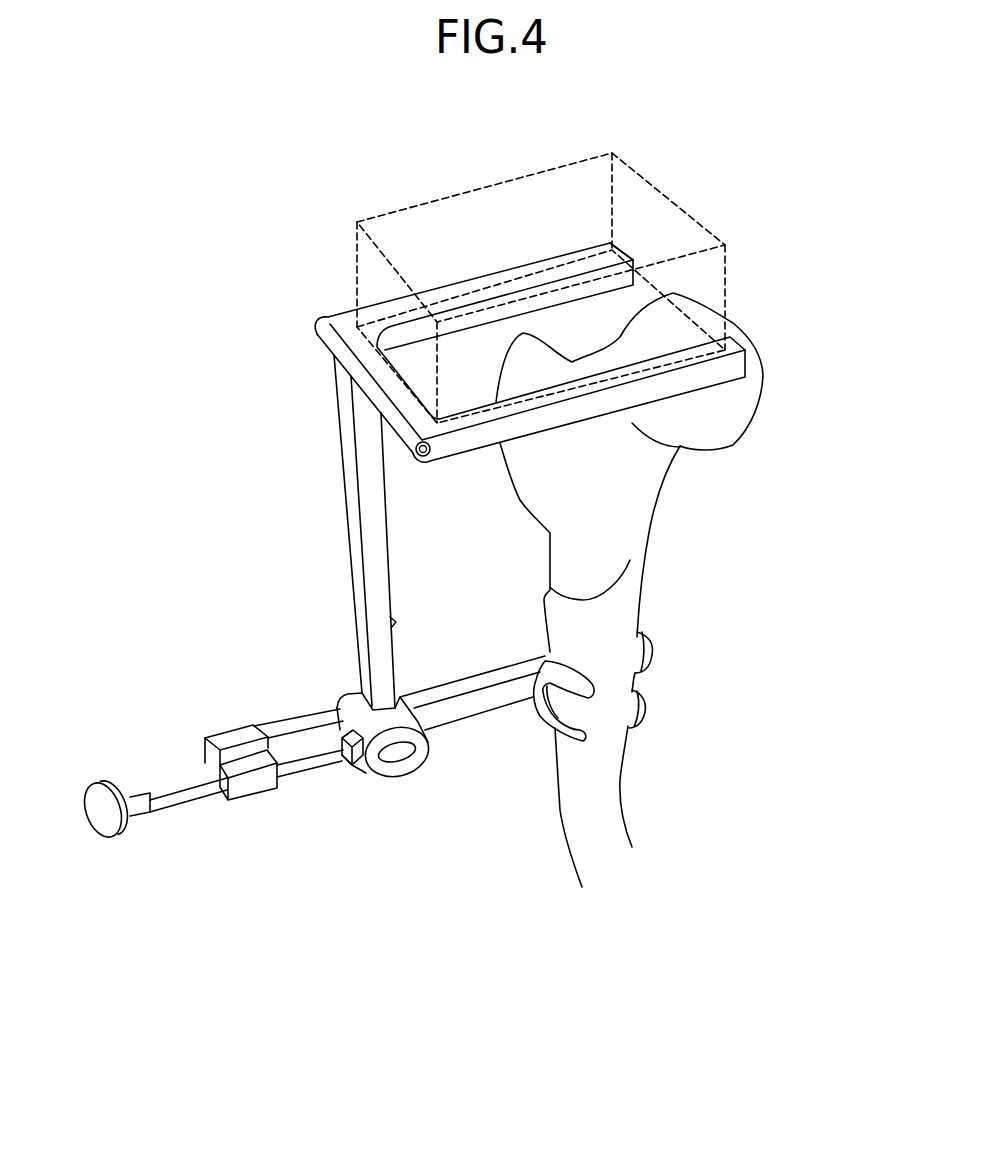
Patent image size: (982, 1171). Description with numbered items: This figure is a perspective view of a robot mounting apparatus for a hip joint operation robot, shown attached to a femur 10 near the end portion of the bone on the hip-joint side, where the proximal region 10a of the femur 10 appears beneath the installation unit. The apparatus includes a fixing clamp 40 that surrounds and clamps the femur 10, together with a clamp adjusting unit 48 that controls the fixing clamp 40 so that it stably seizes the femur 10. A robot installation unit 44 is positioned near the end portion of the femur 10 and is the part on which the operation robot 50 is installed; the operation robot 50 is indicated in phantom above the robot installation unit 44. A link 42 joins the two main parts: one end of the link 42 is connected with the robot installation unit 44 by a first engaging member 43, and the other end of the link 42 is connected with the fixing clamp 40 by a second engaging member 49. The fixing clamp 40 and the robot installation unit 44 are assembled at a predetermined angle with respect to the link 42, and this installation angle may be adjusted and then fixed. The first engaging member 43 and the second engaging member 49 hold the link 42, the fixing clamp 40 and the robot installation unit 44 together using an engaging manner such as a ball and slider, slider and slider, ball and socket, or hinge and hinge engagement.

The femur 10 is at (574, 792).
The proximal end (plateau) of tibia 10a is at (738, 405).
The fixing clamp 40 is at (443, 706).
The link 42 is at (362, 590).
The first engaging member 43 is at (416, 449).
The robot installation unit 44 is at (377, 388).
The clamp adjusting unit 48 is at (136, 812).
The second engaging member 49 is at (400, 777).
The operation robot 50 is at (683, 211).